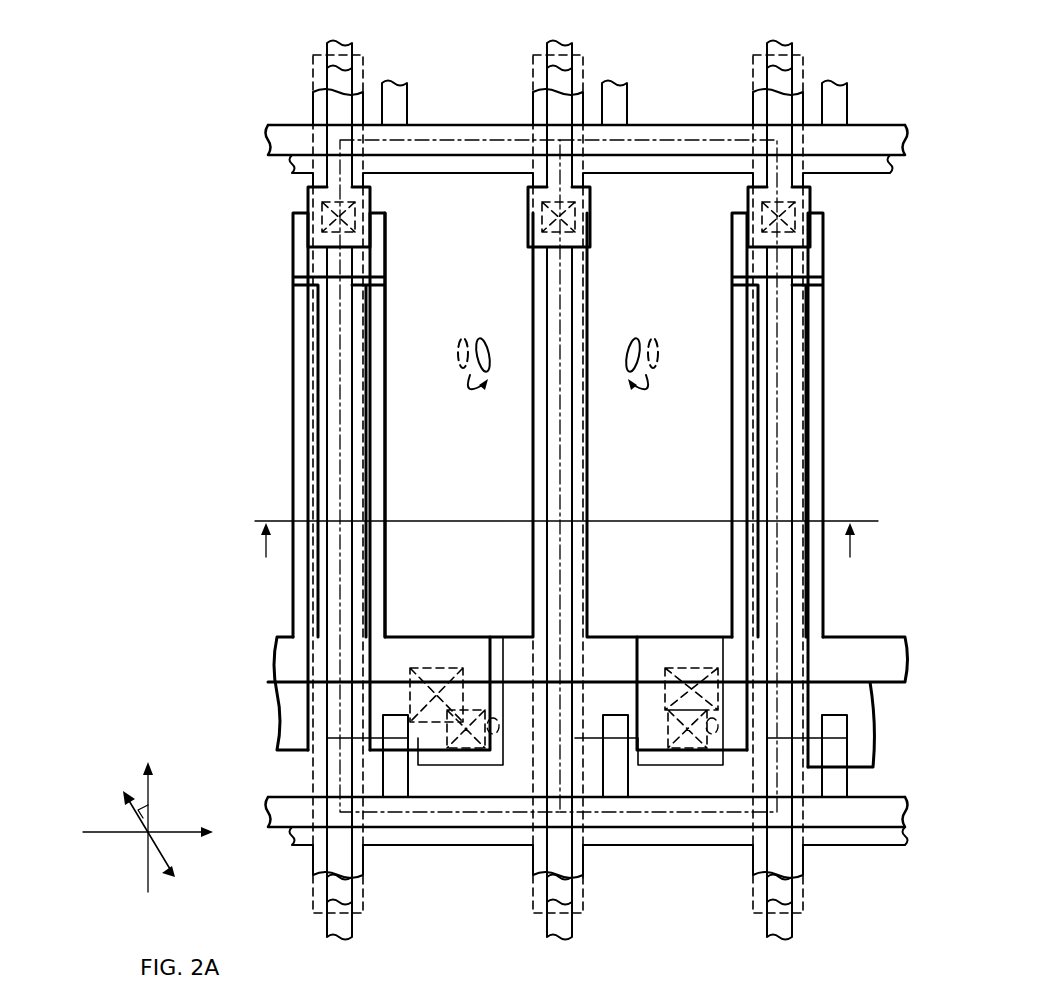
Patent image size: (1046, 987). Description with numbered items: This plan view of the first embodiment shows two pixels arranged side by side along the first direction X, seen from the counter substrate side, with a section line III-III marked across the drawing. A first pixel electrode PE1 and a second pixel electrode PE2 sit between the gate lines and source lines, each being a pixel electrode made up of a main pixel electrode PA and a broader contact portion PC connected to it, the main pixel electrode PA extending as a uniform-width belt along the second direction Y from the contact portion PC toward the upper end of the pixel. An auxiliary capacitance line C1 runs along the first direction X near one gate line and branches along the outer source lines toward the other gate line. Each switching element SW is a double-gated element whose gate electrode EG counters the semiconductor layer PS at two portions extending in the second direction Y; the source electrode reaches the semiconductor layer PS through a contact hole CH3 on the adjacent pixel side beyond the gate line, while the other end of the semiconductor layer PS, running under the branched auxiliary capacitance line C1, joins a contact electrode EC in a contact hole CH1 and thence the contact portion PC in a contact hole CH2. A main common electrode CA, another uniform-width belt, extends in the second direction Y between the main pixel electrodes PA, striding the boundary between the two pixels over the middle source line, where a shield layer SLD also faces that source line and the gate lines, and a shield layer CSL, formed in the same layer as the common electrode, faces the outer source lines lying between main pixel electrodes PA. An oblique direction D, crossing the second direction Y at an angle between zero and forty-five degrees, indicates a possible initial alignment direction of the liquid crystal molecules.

The semiconductor layer PS is at (338, 43).
The shield layer SLD is at (838, 168).
The contact hole CH3 is at (310, 217).
The main pixel electrode PA is at (293, 258).
The first pixel electrode PE1 is at (403, 301).
The second pixel electrode PE2 is at (720, 504).
The contact portion PC is at (420, 637).
The auxiliary capacitance line C1 is at (270, 668).
The gate electrode EG is at (408, 787).
The contact electrode EC is at (485, 765).
The switching element SW is at (395, 787).
The contact hole CH1 is at (490, 731).
The contact hole CH2 is at (457, 724).
The main common electrode CA is at (583, 878).
The shield layer CSL is at (365, 892).
The section line III- III is at (562, 524).
The first direction X is at (159, 832).
The second direction Y is at (146, 813).
The oblique direction D is at (123, 792).